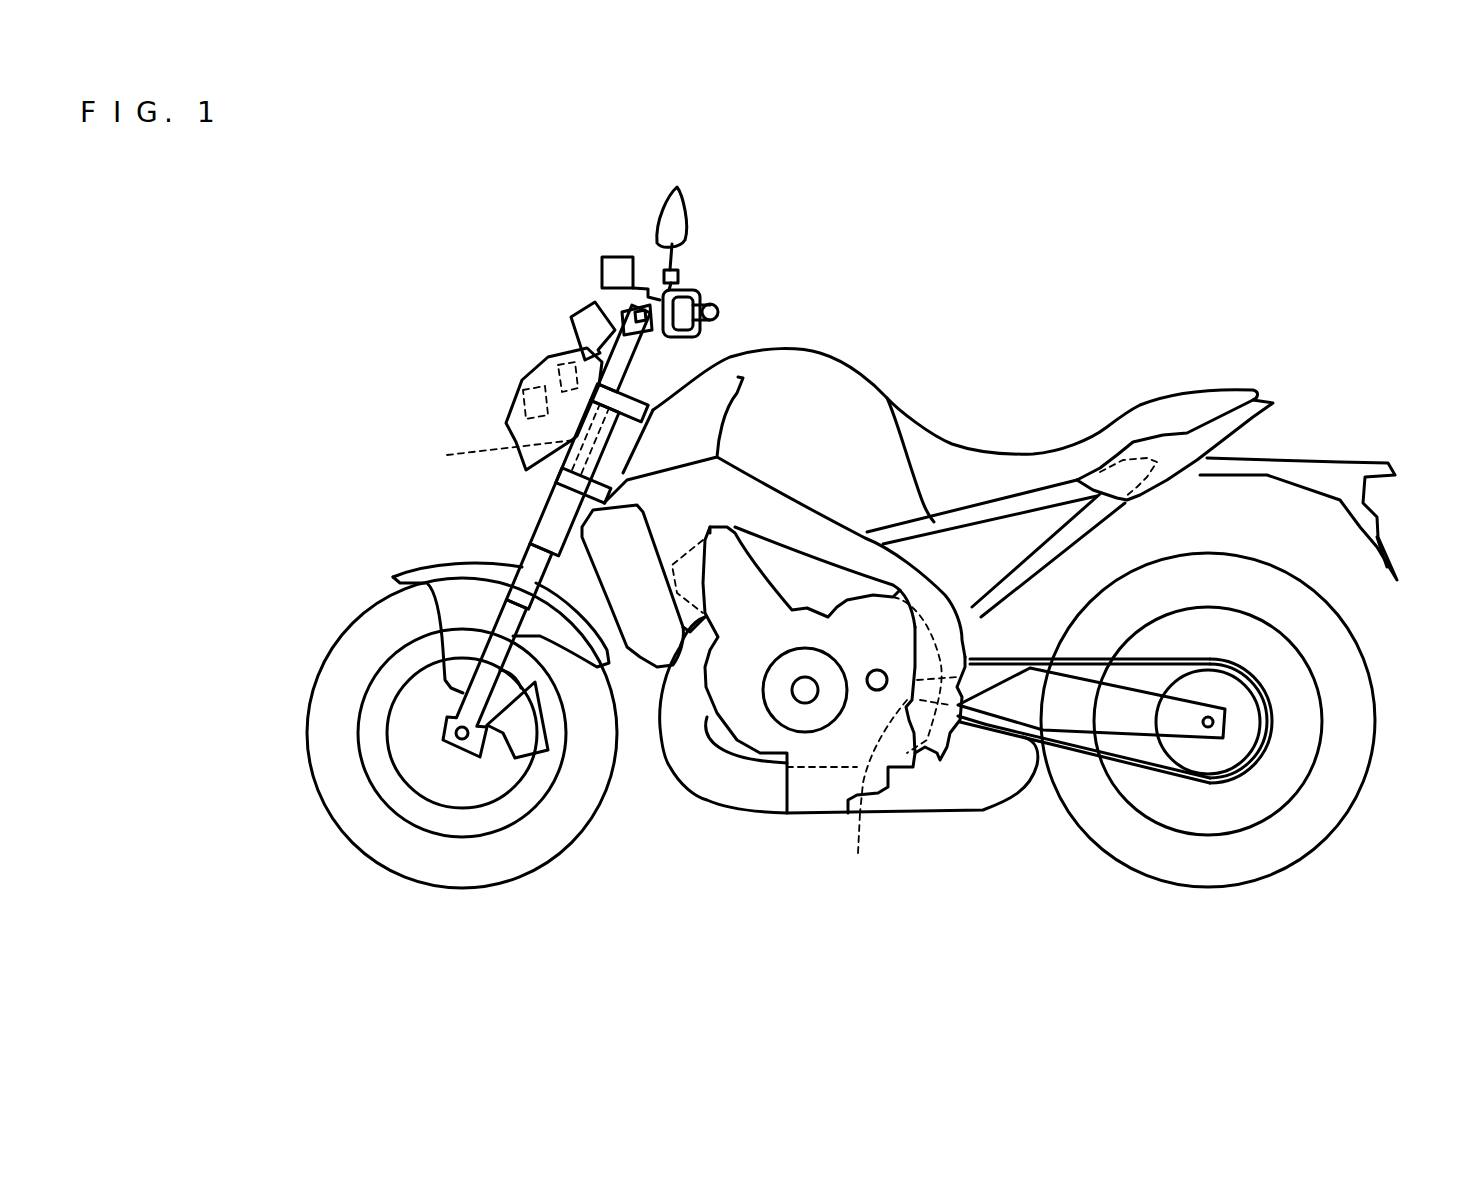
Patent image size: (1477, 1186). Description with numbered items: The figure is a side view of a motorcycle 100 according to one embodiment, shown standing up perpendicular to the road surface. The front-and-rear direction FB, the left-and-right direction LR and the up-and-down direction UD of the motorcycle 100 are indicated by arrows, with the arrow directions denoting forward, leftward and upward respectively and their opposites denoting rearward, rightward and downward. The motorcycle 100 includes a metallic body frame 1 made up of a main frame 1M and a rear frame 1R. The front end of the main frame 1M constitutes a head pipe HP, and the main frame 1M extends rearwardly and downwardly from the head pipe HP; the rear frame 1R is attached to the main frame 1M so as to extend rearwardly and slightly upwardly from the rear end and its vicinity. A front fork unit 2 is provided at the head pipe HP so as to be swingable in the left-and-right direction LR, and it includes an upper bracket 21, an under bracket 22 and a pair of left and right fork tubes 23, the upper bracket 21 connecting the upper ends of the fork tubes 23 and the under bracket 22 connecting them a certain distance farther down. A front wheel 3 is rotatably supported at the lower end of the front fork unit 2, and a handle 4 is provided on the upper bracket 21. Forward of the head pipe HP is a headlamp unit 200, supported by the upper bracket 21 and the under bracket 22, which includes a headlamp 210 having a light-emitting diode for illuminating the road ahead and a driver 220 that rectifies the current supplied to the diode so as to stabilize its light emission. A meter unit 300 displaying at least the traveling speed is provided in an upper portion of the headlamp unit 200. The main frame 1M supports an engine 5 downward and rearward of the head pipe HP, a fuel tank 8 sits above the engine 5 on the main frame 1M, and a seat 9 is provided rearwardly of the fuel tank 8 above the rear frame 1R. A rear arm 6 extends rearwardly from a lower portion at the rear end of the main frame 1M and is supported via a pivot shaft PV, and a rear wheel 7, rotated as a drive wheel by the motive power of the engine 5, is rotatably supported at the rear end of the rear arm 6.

The motorcycle 100 is at (1393, 196).
The body frame 1 is at (921, 457).
The main frame 1M is at (803, 522).
The rear frame 1R is at (1040, 493).
The front fork unit 2 is at (508, 581).
The front wheel 3 is at (333, 680).
The handle 4 is at (690, 287).
The engine 5 is at (849, 709).
The rear arm 6 is at (1135, 715).
The rear wheel 7 is at (1363, 727).
The fuel tank 8 is at (800, 362).
The seat 9 is at (1152, 413).
The upper bracket 21 is at (653, 408).
The under bracket 22 is at (582, 508).
The fork tubes 23 is at (531, 540).
The headlamp unit 200 is at (478, 362).
The headlamp 210 is at (520, 400).
The driver 220 is at (547, 360).
The meter unit 300 is at (585, 313).
The head pipe HP is at (496, 454).
The pivot shaft PV is at (858, 852).
The up-and-down direction UD is at (262, 295).
The front-and-rear direction FB is at (860, 932).
The left-and-right direction LR is at (264, 893).